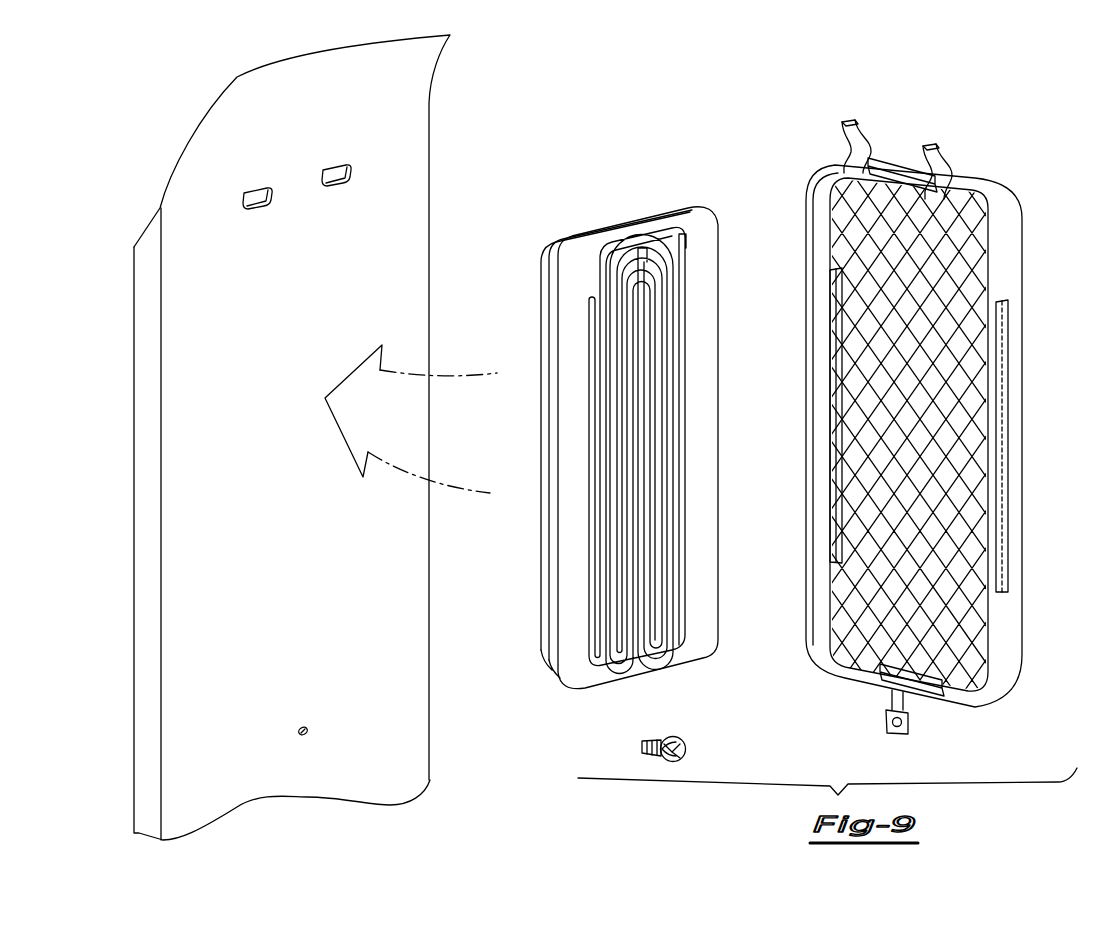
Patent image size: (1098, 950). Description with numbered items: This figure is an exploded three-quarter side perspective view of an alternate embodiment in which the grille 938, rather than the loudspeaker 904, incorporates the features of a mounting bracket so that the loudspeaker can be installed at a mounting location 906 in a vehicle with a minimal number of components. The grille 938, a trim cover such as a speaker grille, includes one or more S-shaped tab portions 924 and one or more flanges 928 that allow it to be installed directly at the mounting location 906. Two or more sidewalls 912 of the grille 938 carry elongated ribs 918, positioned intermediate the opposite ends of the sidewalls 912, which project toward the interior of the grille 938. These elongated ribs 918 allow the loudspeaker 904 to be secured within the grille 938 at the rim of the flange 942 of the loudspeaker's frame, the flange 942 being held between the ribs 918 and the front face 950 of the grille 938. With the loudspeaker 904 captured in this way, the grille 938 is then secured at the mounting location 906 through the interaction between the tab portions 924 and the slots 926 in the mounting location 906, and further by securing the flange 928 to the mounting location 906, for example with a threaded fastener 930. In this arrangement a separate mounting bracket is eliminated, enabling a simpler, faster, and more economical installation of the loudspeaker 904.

The mounting location 906 is at (240, 102).
The slots 926 is at (256, 208).
The loudspeaker 904 is at (615, 450).
The flange 942 is at (558, 657).
The threaded fastener 930 is at (689, 749).
The grille 938 is at (779, 410).
The sidewalls 912 is at (1008, 278).
The elongated ribs 918 is at (832, 386).
The front face 950 is at (872, 628).
The S-shaped tab portions 924 is at (935, 142).
The flange 928 is at (905, 722).